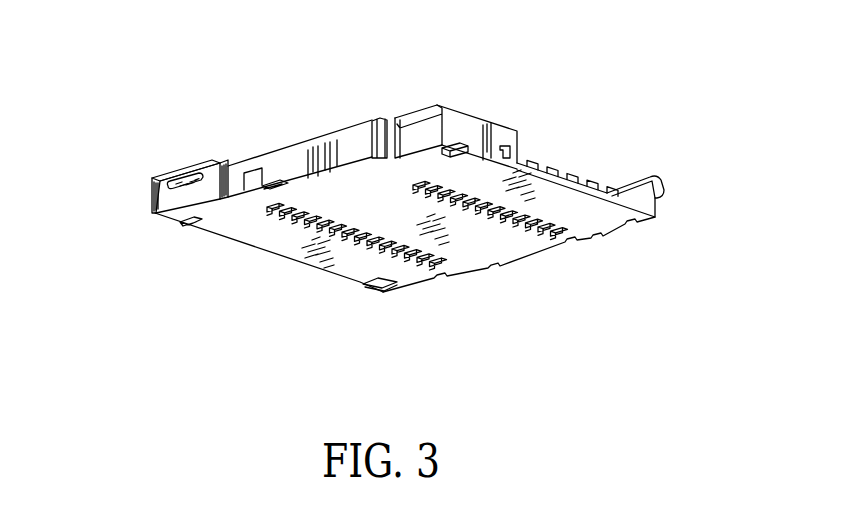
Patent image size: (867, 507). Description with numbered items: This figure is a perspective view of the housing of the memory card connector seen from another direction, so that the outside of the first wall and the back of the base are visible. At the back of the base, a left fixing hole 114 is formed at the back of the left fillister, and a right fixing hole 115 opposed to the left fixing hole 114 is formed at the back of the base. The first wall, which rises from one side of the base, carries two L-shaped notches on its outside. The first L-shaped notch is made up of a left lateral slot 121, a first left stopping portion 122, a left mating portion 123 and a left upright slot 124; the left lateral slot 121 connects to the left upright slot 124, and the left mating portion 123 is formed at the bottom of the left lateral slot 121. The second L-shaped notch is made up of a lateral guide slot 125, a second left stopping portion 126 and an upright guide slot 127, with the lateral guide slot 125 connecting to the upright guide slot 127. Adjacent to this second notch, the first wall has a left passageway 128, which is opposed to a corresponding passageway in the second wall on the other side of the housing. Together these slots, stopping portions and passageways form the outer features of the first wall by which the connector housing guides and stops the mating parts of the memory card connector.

The left fixing hole 114 is at (192, 224).
The right fixing hole 115 is at (380, 293).
The left lateral slot 121 is at (438, 133).
The first left stopping portion 122 is at (407, 112).
The left mating portion 123 is at (402, 155).
The left upright slot 124 is at (385, 128).
The lateral guide slot 125 is at (253, 190).
The second left stopping portion 126 is at (250, 170).
The upright guide slot 127 is at (228, 168).
The left passageway 128 is at (152, 181).